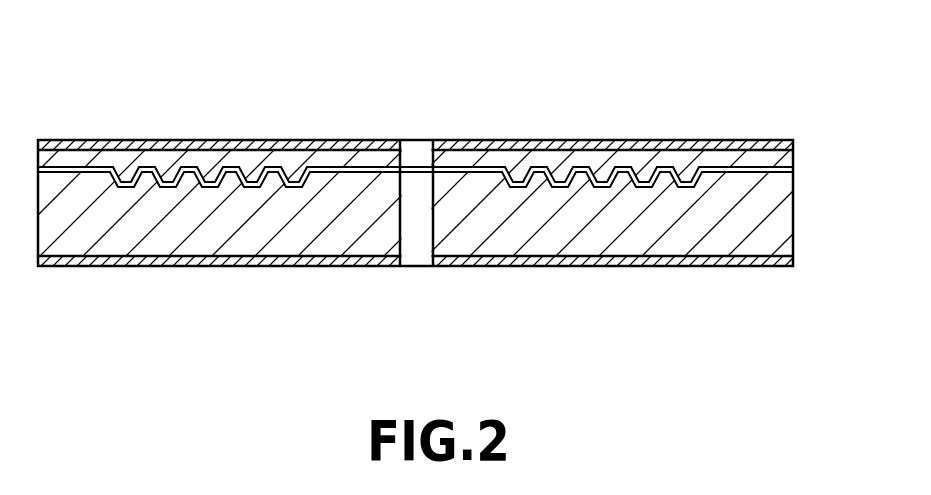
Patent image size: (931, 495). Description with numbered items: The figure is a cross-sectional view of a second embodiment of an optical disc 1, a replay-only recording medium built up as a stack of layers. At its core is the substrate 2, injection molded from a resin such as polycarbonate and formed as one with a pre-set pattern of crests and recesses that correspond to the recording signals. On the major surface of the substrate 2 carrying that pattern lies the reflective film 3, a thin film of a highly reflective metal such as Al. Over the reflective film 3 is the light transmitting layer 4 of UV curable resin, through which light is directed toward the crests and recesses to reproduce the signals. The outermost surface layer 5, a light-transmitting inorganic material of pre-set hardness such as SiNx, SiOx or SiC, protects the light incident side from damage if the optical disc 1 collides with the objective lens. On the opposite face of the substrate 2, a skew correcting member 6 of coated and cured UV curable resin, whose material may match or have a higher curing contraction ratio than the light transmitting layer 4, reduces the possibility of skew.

The optical disc 1 is at (440, 177).
The substrate 2 is at (783, 216).
The reflective film 3 is at (674, 166).
The light transmitting layer 4 is at (783, 152).
The surface layer 5 is at (573, 150).
The skew correcting member 6 is at (606, 266).